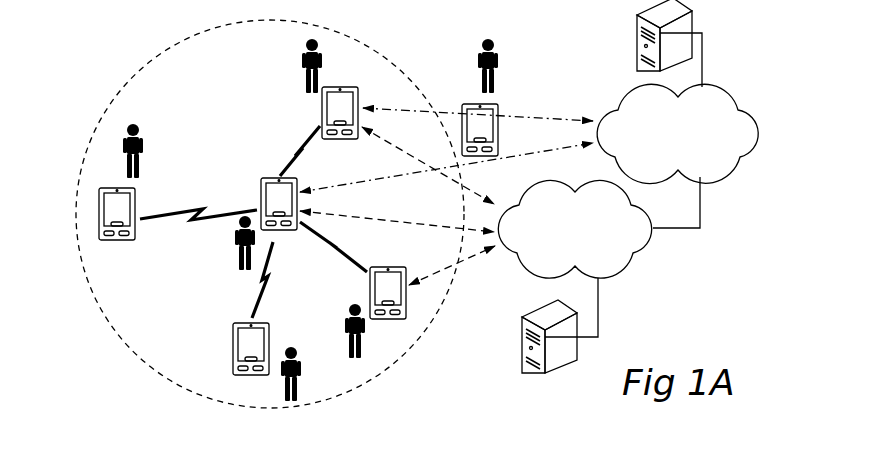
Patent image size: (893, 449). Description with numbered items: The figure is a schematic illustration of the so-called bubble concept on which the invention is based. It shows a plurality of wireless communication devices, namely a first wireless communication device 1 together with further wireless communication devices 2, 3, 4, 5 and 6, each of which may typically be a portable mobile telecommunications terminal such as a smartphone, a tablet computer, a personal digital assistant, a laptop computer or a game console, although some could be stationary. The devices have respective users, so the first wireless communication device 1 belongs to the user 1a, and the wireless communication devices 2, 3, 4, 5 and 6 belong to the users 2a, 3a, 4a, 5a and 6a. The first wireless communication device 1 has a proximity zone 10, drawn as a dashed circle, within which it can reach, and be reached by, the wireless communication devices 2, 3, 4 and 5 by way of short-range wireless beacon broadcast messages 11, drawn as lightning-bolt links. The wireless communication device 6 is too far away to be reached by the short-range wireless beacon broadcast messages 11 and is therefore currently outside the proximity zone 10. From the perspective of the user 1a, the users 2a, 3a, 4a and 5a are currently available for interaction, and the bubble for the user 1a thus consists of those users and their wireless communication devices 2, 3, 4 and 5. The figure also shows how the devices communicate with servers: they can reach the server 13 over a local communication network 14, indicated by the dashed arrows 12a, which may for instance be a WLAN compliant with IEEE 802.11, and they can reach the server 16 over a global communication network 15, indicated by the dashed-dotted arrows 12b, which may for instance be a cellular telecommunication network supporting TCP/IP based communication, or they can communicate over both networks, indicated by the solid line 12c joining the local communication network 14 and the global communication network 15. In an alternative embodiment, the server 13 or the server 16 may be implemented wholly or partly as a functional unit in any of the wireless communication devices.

The first wireless communication device 1 is at (262, 194).
The user of first wireless communication device 1a is at (236, 236).
The wireless communication device 2 is at (100, 211).
The user of wireless communication device 2a is at (123, 143).
The wireless communication device 3 is at (323, 113).
The user of wireless communication device 3a is at (302, 58).
The wireless communication device 4 is at (234, 350).
The user of wireless communication device 4a is at (302, 370).
The wireless communication device 5 is at (371, 289).
The user of wireless communication device 5a is at (345, 322).
The wireless communication device 6 is at (463, 128).
The user of wireless communication device 6a is at (478, 58).
The proximity zone 10 is at (108, 107).
The short-range wireless beacon broadcast messages 11 is at (286, 158).
The dashed arrows 12a is at (433, 229).
The dashed-dotted arrows 12b is at (543, 119).
The solid line 12c is at (695, 229).
The server 13 is at (522, 347).
The local communication network 14 is at (566, 225).
The global communication network 15 is at (667, 130).
The server 16 is at (637, 42).